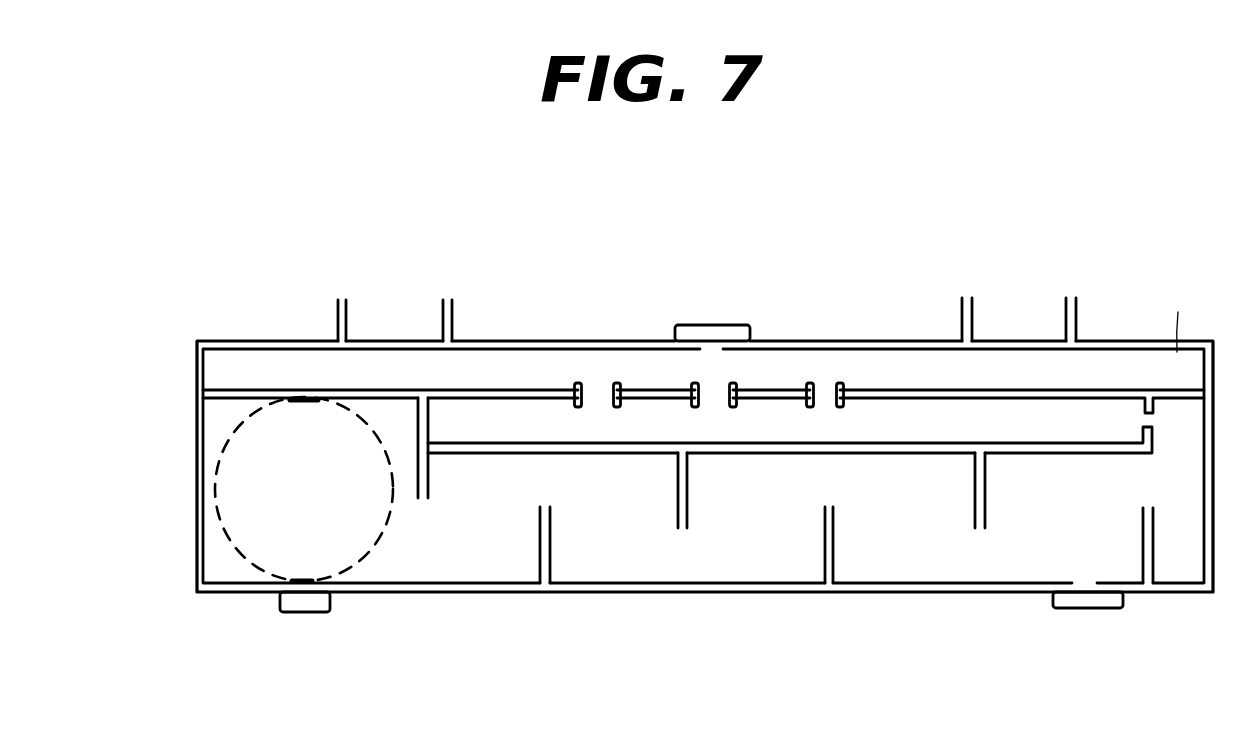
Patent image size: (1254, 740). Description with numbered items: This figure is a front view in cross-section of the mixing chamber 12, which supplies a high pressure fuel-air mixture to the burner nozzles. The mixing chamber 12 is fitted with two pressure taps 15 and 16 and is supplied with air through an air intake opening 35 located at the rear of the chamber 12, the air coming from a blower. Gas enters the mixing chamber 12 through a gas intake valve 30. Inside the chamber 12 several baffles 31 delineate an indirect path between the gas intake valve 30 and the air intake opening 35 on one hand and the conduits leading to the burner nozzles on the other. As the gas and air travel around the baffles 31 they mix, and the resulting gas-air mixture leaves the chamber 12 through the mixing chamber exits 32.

The mixing chamber 12 is at (618, 590).
The pressure tap 15 is at (697, 325).
The pressure tap 16 is at (1087, 610).
The gas intake valve 30 is at (281, 611).
The baffles 31 is at (690, 518).
The mixing chamber exits 32 is at (388, 313).
The air intake opening 35 is at (272, 452).